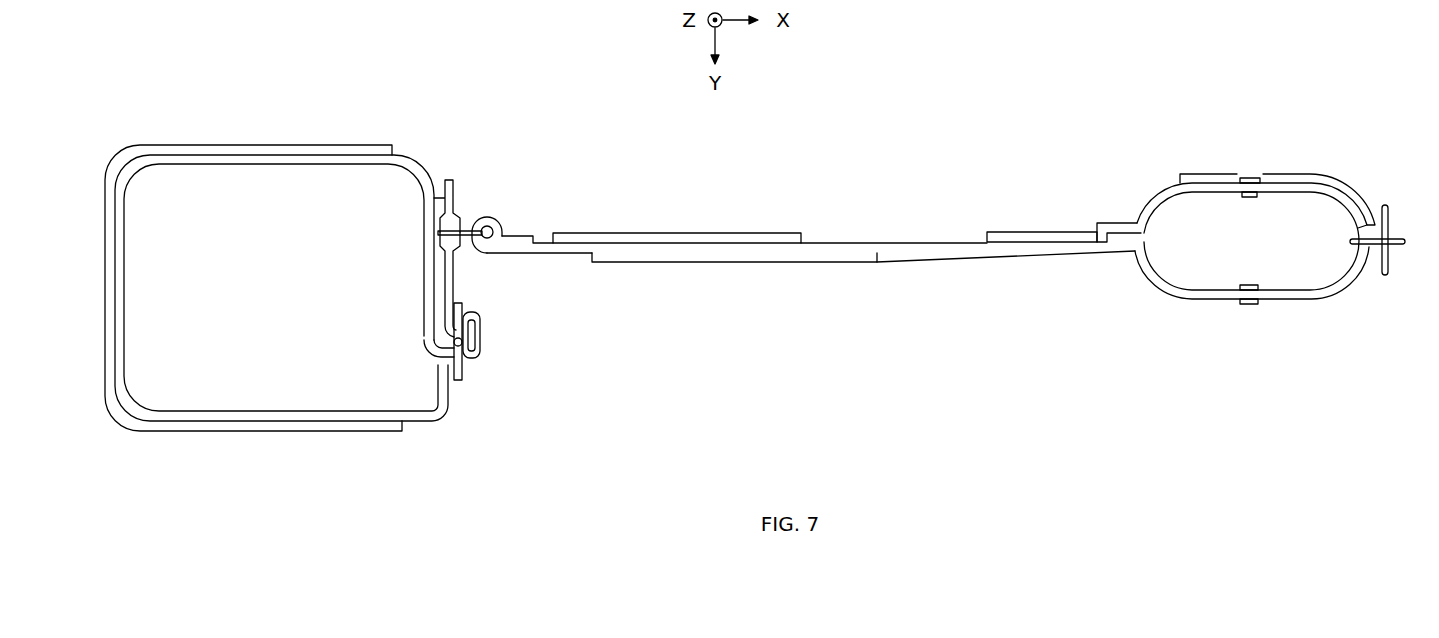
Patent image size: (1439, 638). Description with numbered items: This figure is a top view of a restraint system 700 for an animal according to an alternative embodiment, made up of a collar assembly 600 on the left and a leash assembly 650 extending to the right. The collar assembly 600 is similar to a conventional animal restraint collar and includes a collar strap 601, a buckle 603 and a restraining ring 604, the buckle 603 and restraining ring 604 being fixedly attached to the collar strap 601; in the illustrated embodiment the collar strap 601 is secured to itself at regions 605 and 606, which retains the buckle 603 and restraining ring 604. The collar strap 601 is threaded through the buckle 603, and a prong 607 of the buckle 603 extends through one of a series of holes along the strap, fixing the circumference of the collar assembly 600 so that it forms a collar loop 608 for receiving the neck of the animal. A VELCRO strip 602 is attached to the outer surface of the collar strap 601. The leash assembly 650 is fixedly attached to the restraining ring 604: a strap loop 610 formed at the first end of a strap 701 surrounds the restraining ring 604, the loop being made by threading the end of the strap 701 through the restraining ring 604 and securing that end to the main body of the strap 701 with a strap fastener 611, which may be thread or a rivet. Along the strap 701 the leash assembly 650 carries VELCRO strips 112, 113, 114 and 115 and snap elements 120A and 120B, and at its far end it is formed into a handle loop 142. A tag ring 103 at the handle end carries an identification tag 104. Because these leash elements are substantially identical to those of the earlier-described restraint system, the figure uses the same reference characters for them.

The collar assembly 600 is at (368, 451).
The collar strap 601 is at (245, 412).
The VELCRO strip 602 is at (180, 428).
The buckle 603 is at (472, 363).
The restraining ring 604 is at (463, 230).
The region 605 is at (435, 211).
The region 606 is at (430, 272).
The prong 607 is at (478, 306).
The collar loop 608 is at (181, 180).
The strap loop 610 is at (500, 225).
The strap fastener 611 is at (525, 247).
The strap 701 is at (868, 243).
The restraint system 700 is at (962, 153).
The VELCRO strip 112 is at (688, 260).
The VELCRO strip 113 is at (750, 238).
The VELCRO strip 114 is at (1040, 237).
The leash assembly 650 is at (993, 261).
The handle loop 142 is at (1198, 210).
The VELCRO strip 115 is at (1278, 177).
The snap element 120A is at (1248, 303).
The snap element 120B is at (1243, 179).
The tag ring 103 is at (1395, 239).
The identification tag 104 is at (1386, 277).